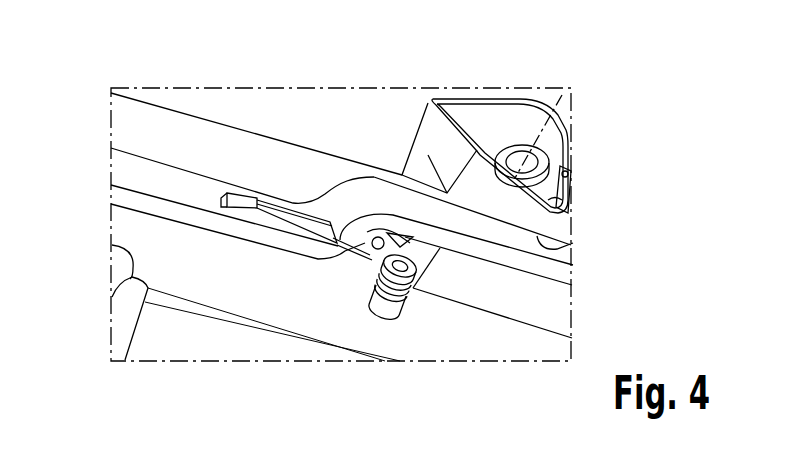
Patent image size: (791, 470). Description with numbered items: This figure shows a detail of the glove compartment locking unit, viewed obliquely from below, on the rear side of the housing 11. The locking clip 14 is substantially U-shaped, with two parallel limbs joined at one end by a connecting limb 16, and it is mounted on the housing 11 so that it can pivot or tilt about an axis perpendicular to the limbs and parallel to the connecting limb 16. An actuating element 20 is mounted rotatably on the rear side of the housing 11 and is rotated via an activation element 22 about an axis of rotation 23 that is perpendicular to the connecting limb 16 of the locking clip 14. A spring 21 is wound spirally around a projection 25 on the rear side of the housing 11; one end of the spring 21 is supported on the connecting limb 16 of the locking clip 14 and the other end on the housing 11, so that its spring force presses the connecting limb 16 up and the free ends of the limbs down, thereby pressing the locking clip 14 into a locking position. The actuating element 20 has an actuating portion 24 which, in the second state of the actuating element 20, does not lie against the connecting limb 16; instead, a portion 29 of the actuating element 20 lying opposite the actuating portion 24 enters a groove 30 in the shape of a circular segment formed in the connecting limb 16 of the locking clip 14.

The housing 11 is at (252, 290).
The locking clip 14 is at (98, 186).
The connecting limb 16 is at (136, 170).
The actuating element 20 is at (480, 94).
The spring 21 is at (354, 279).
The activation element 22 is at (519, 298).
The axis of rotation 23 is at (556, 96).
The actuating portion 24 is at (423, 130).
The projection 25 is at (380, 310).
The portion of the actuating element 29 is at (562, 193).
The groove 30 is at (560, 247).